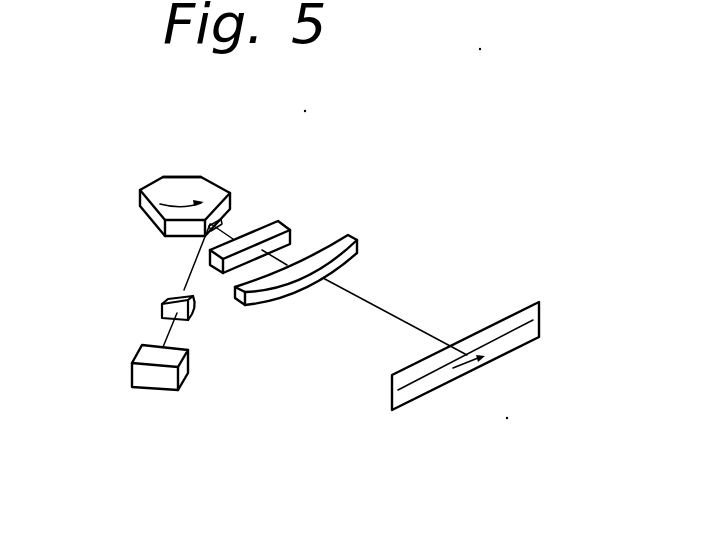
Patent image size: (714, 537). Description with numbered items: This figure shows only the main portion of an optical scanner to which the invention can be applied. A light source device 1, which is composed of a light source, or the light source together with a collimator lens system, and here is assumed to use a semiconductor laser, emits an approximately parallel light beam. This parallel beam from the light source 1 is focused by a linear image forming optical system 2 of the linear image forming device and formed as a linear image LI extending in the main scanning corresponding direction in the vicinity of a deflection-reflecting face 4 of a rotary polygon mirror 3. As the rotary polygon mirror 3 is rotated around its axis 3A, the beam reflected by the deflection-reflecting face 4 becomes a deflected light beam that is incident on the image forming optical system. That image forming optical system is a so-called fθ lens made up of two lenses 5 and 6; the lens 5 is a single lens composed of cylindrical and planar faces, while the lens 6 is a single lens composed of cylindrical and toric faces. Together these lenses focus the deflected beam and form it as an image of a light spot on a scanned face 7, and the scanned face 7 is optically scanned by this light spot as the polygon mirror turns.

The light source device 1 is at (137, 353).
The linear image forming optical system 2 is at (158, 305).
The rotary polygon mirror 3 is at (152, 188).
The axis 3A is at (180, 196).
The deflection-reflecting face 4 is at (227, 216).
The linear image LI is at (203, 243).
The lens 5 is at (279, 220).
The lens 6 is at (348, 232).
The scanned face 7 is at (520, 317).